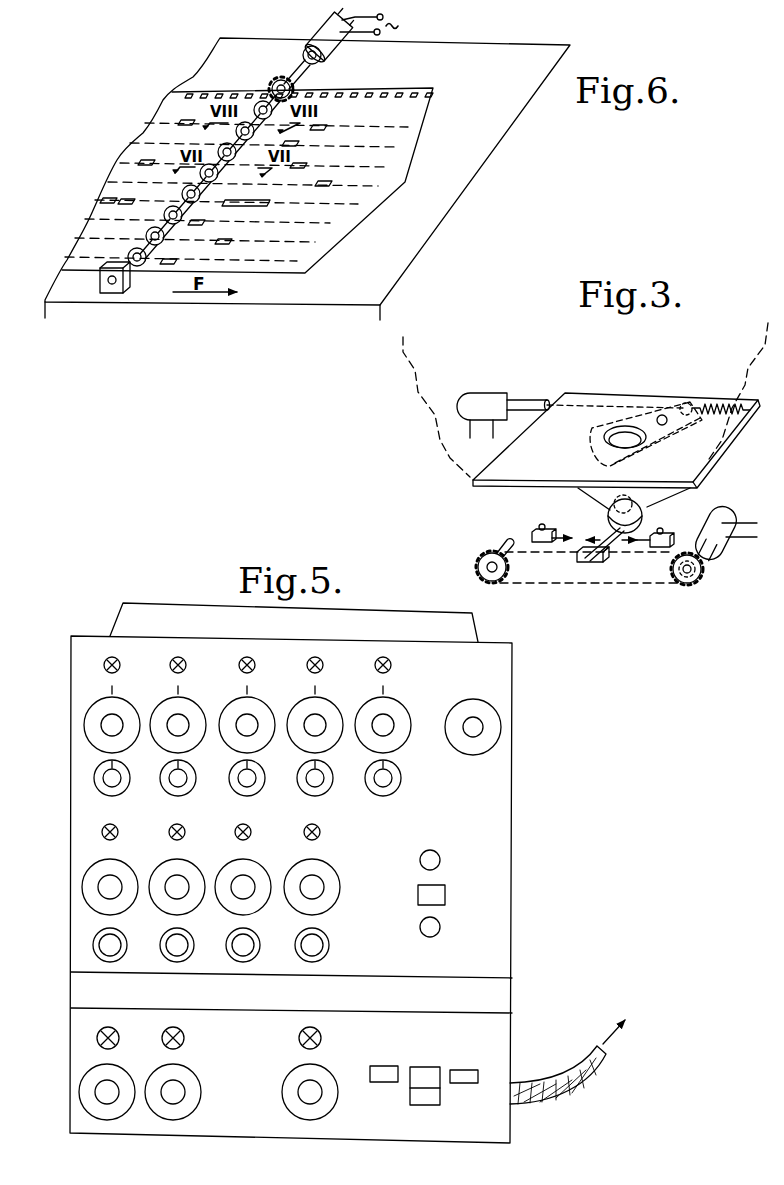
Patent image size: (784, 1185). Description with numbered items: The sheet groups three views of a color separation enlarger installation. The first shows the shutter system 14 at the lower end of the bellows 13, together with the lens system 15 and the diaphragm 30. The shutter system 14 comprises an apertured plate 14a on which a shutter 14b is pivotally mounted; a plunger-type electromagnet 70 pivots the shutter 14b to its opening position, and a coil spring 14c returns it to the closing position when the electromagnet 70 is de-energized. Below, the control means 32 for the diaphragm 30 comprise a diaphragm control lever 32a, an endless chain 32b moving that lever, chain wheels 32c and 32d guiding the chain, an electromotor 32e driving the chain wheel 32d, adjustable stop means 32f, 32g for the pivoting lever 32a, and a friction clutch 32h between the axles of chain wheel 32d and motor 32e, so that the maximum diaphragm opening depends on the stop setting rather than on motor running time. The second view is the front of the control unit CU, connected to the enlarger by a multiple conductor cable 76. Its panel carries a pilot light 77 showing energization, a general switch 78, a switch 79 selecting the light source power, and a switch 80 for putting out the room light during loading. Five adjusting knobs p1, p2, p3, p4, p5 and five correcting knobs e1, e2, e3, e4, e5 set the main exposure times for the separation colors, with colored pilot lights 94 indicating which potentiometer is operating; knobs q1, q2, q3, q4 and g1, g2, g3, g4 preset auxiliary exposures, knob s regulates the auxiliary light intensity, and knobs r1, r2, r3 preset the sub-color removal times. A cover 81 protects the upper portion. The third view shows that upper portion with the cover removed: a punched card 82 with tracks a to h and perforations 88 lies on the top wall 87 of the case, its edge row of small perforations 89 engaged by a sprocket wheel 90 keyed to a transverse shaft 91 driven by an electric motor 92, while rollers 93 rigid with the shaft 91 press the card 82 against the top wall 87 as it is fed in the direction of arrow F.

In FIG. 6, the top wall 87 is at (455, 105).
In FIG. 6, the punched card 82 is at (383, 113).
In FIG. 6, the row of small perforations 89 is at (352, 95).
In FIG. 6, the perforation 88 is at (273, 120).
In FIG. 6, the sprocket wheel 90 is at (277, 83).
In FIG. 6, the transverse shaft 91 is at (254, 112).
In FIG. 6, the electric motor 92 is at (320, 43).
In FIG. 6, the rollers 93 is at (132, 255).
In FIG. 6, the control unit CU is at (493, 158).
In FIG. 5, the control unit CU is at (518, 722).
In FIG. 3, the bellows 13 is at (416, 380).
In FIG. 3, the shutter system 14 is at (598, 393).
In FIG. 3, the apertured plate 14a is at (493, 467).
In FIG. 3, the shutter 14b is at (686, 436).
In FIG. 3, the coil spring 14c is at (704, 404).
In FIG. 3, the electromagnet 70 is at (477, 394).
In FIG. 3, the diaphragm 30 is at (643, 514).
In FIG. 3, the lens system 15 is at (612, 510).
In FIG. 3, the control means 32 is at (620, 559).
In FIG. 3, the diaphragm control lever 32a is at (607, 551).
In FIG. 3, the endless chain 32b is at (562, 586).
In FIG. 3, the chain wheel 32c is at (500, 578).
In FIG. 3, the chain wheel 32d is at (687, 587).
In FIG. 3, the electromotor 32e is at (723, 542).
In FIG. 3, the adjustable stop means 32f is at (552, 511).
In FIG. 3, the adjustable stop means 32g is at (667, 532).
In FIG. 3, the friction clutch 32h is at (698, 579).
In FIG. 5, the cover 81 is at (135, 611).
In FIG. 5, the colored pilot lights 94 is at (173, 662).
In FIG. 5, the pilot light 77 is at (437, 854).
In FIG. 5, the general switch 78 is at (383, 1082).
In FIG. 5, the switch 79 is at (430, 1100).
In FIG. 5, the switch 80 is at (463, 1069).
In FIG. 5, the multiple conductor cable 76 is at (578, 1076).
In FIG. 5, the control knob p1 is at (107, 718).
In FIG. 5, the control knob p2 is at (174, 718).
In FIG. 5, the control knob p3 is at (241, 718).
In FIG. 5, the control knob p4 is at (310, 718).
In FIG. 5, the control knob p5 is at (376, 722).
In FIG. 5, the control knob s is at (468, 727).
In FIG. 5, the control knob e1 is at (115, 778).
In FIG. 5, the control knob e2 is at (182, 778).
In FIG. 5, the control knob e3 is at (250, 778).
In FIG. 5, the control knob e4 is at (318, 778).
In FIG. 5, the control knob e5 is at (387, 778).
In FIG. 5, the adjusting knob q1 is at (113, 884).
In FIG. 5, the adjusting knob q2 is at (180, 884).
In FIG. 5, the adjusting knob q3 is at (247, 884).
In FIG. 5, the adjusting knob q4 is at (317, 884).
In FIG. 5, the adjusting knob g1 is at (114, 947).
In FIG. 5, the adjusting knob g2 is at (181, 947).
In FIG. 5, the adjusting knob g3 is at (247, 947).
In FIG. 5, the adjusting knob g4 is at (325, 946).
In FIG. 5, the control knob r1 is at (102, 1088).
In FIG. 5, the control knob r2 is at (177, 1091).
In FIG. 5, the control knob r3 is at (306, 1090).